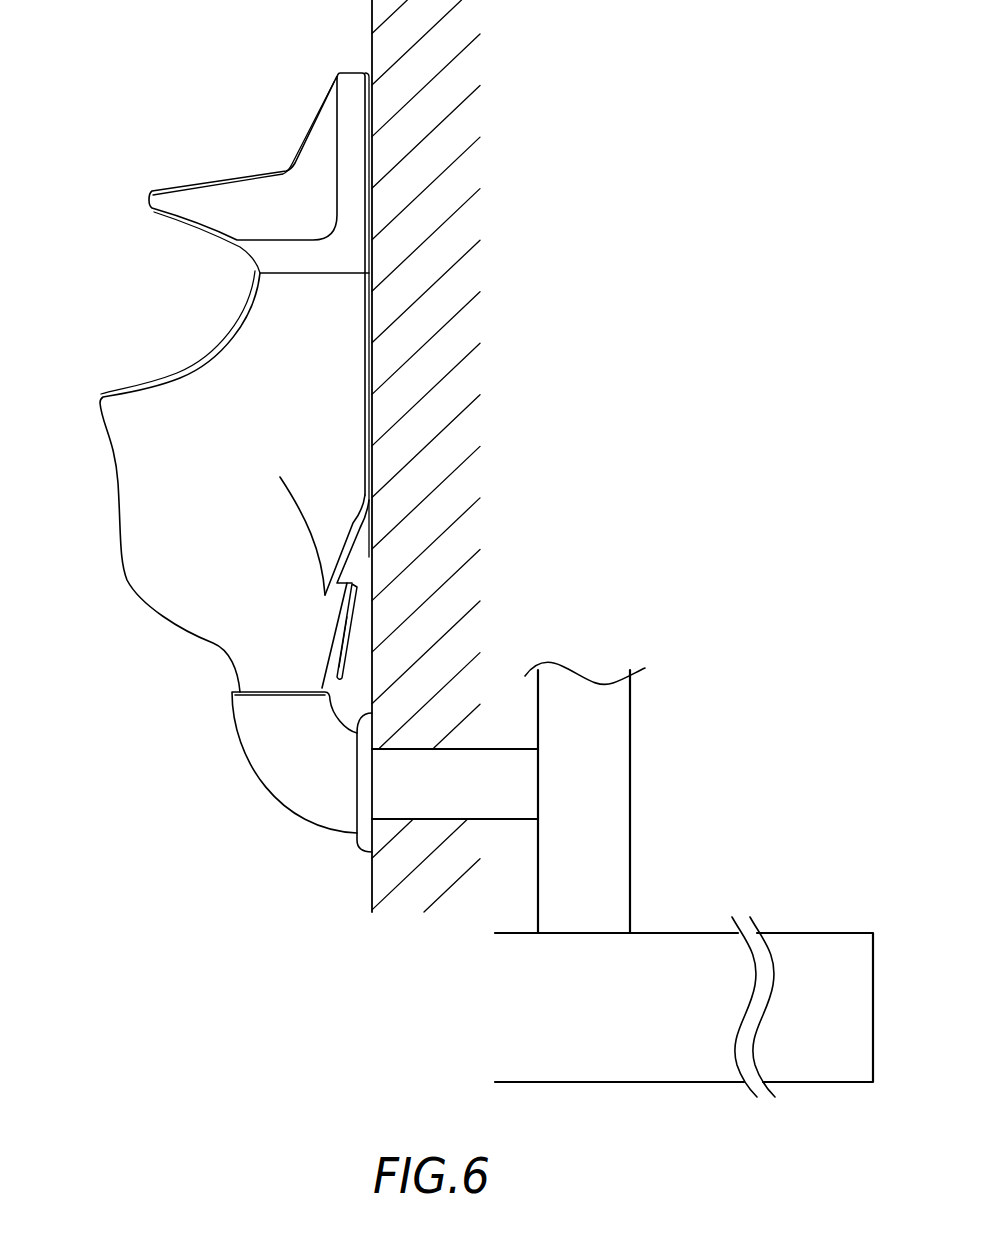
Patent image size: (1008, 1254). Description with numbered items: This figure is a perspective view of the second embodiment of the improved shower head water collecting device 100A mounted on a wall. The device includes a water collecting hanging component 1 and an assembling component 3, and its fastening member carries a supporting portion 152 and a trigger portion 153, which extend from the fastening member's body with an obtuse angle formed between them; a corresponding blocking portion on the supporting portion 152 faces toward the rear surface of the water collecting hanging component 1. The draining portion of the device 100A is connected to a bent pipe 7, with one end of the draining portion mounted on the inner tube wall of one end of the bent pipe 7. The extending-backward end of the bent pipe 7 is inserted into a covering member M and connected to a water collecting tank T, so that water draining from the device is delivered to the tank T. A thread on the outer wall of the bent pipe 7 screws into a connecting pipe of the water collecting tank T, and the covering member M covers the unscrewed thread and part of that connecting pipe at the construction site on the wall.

The improved shower head water collecting device 100A is at (173, 100).
The water collecting hanging component 1 is at (137, 500).
The assembling component 3 is at (192, 208).
The supporting portion 152 is at (353, 618).
The trigger portion 153 is at (340, 663).
The bent pipe 7 is at (303, 793).
The covering member M is at (358, 847).
The water collecting tank T is at (817, 953).